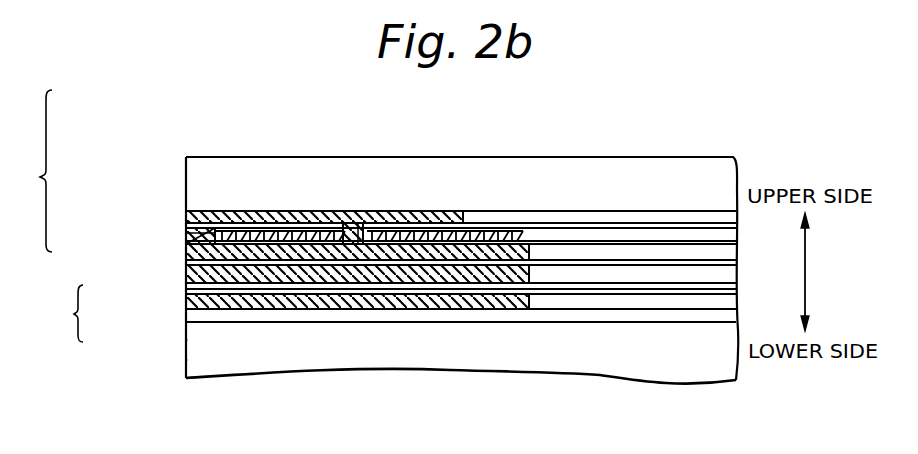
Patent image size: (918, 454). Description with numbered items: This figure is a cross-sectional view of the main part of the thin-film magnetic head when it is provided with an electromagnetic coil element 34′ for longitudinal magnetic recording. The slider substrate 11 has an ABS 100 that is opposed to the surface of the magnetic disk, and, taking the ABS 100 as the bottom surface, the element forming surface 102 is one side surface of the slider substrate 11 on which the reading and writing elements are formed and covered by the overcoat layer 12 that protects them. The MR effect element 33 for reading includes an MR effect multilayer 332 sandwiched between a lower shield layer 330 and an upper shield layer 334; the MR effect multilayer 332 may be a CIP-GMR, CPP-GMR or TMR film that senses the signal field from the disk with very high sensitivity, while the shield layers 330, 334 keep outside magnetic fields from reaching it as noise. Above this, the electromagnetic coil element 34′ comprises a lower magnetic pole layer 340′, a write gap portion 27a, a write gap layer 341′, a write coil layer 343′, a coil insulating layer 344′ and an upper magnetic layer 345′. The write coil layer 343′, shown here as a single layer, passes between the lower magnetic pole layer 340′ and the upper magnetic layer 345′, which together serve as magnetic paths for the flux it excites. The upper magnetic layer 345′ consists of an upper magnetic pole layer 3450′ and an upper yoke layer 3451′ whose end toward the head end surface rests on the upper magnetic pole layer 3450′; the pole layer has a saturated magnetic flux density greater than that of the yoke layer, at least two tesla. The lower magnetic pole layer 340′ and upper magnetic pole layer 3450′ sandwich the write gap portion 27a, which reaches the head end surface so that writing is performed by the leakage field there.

The overcoat layer 12 is at (497, 178).
The write gap layer 341′ is at (290, 222).
The write coil layer 343′ is at (265, 228).
The coil insulating layer 344′ is at (250, 236).
The upper magnetic layer 345′ is at (106, 172).
The upper yoke layer 3451′ is at (228, 236).
The upper magnetic pole layer 3450′ is at (200, 241).
The electromagnetic coil element 34′ is at (27, 171).
The lower magnetic pole layer 340′ is at (186, 249).
The write gap portion 27a is at (186, 268).
The upper shield layer 334 is at (186, 282).
The MR effect multilayer 332 is at (186, 305).
The lower shield layer 330 is at (186, 320).
The MR effect element 33 is at (59, 313).
The ABS 100 is at (186, 335).
The slider substrate 11 is at (186, 353).
The element forming surface 102 is at (580, 322).